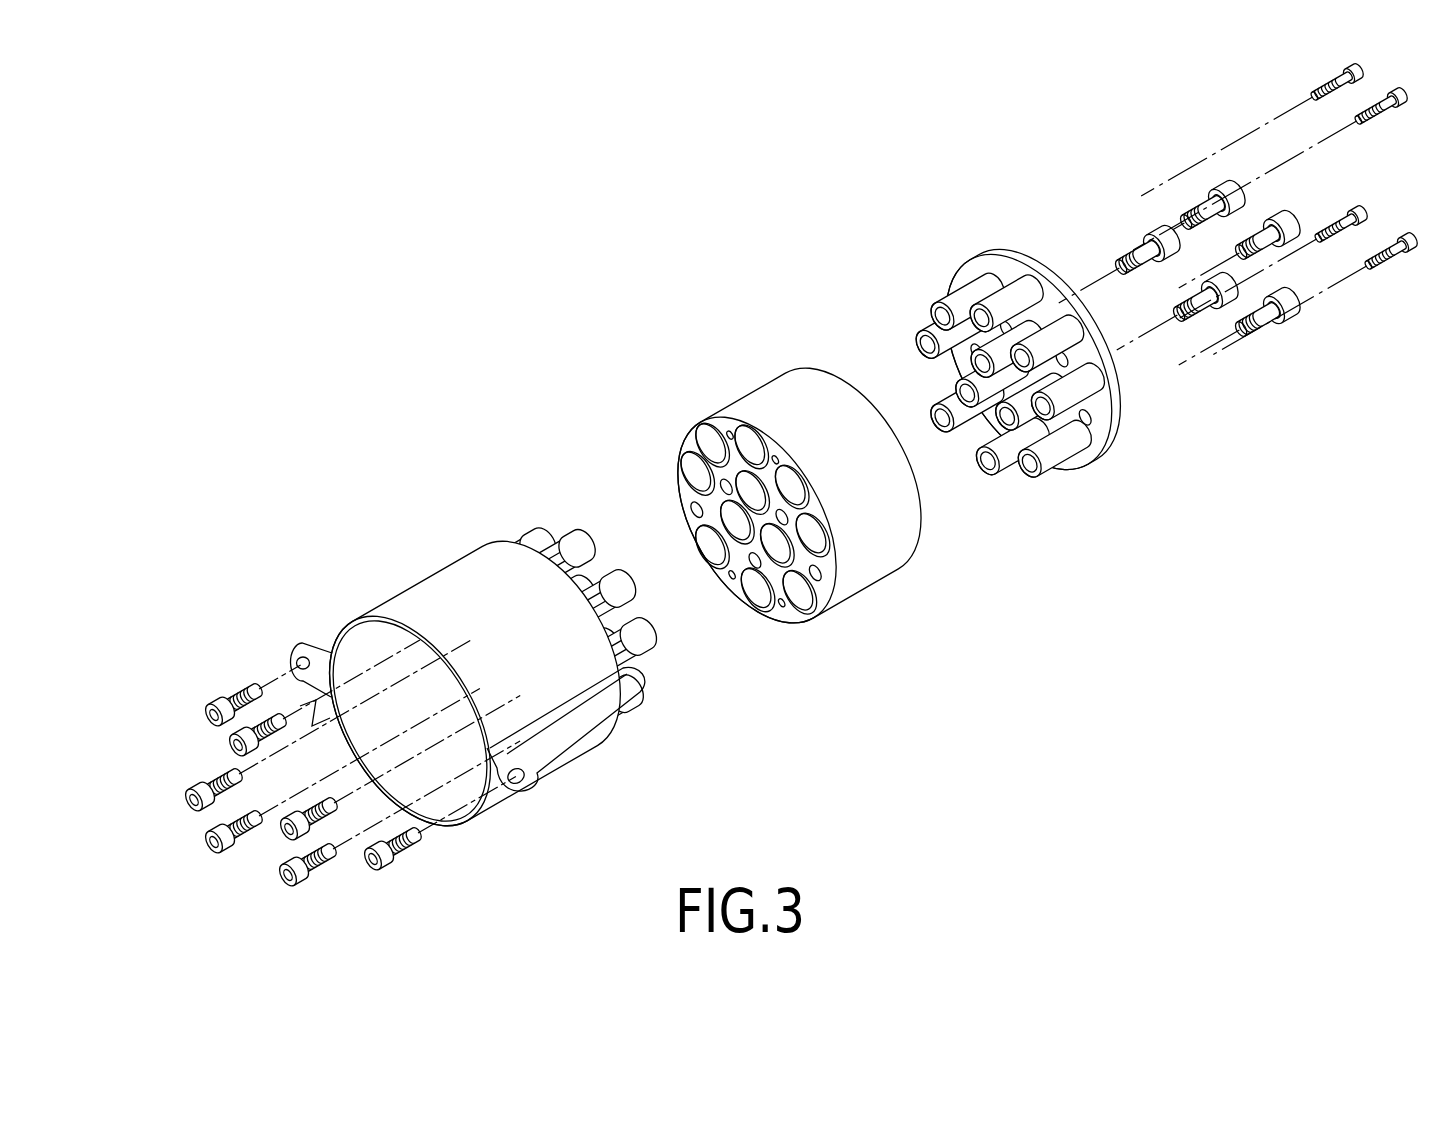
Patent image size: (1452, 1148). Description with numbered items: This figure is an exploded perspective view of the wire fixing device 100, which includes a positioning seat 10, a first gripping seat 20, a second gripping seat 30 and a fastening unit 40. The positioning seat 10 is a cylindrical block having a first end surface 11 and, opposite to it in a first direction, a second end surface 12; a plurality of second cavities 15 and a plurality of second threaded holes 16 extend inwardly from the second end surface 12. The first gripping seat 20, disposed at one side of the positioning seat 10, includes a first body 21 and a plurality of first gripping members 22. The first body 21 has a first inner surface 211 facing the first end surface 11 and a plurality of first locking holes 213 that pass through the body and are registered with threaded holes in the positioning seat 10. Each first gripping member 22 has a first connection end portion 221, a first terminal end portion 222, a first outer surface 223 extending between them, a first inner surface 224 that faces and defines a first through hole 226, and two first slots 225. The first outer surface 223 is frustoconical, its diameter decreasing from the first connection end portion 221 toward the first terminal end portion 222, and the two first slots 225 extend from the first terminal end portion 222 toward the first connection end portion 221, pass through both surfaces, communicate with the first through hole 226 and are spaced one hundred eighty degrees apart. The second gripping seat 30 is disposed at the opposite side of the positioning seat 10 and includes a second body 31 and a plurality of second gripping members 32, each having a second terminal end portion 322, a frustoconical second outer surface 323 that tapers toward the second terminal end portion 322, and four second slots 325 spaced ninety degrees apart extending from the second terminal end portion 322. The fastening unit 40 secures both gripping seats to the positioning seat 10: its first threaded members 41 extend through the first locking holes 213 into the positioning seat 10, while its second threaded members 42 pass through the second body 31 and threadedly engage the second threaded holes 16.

The wire fixing device 100 is at (788, 496).
The positioning seat 10 is at (799, 487).
The first end surface 11 is at (836, 368).
The second end surface 12 is at (787, 614).
The second cavity 15 is at (760, 605).
The second threaded hole 16 is at (733, 583).
The first gripping seat 20 is at (1078, 336).
The first body 21 is at (1105, 347).
The first inner surface 211 is at (1093, 458).
The first locking hole 213 is at (1090, 422).
The first gripping member 22 is at (997, 336).
The first connection end portion 221 is at (1055, 290).
The first terminal end portion 222 is at (993, 280).
The first outer surface 223 is at (1025, 300).
The first inner surface 224 is at (955, 292).
The first slot 225 is at (1008, 305).
The first through hole 226 is at (1020, 475).
The second gripping seat 30 is at (507, 605).
The second body 31 is at (421, 580).
The second gripping member 32 is at (588, 560).
The second terminal end portion 322 is at (597, 537).
The second outer surface 323 is at (567, 537).
The second slot 325 is at (555, 537).
The fastening unit 40 is at (341, 780).
The first threaded member 41 is at (1297, 222).
The second threaded member 42 is at (220, 772).